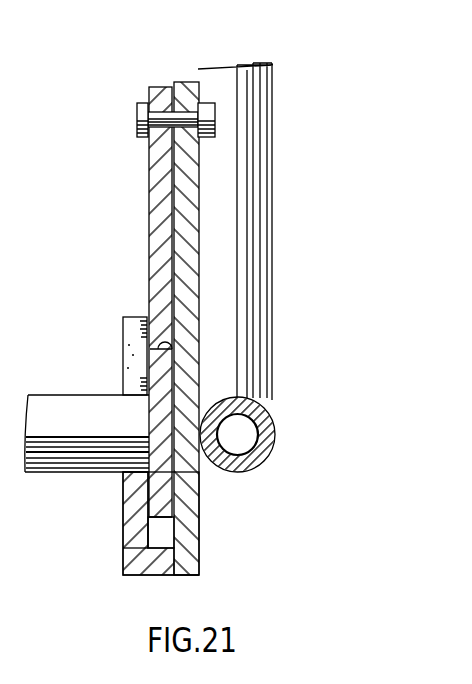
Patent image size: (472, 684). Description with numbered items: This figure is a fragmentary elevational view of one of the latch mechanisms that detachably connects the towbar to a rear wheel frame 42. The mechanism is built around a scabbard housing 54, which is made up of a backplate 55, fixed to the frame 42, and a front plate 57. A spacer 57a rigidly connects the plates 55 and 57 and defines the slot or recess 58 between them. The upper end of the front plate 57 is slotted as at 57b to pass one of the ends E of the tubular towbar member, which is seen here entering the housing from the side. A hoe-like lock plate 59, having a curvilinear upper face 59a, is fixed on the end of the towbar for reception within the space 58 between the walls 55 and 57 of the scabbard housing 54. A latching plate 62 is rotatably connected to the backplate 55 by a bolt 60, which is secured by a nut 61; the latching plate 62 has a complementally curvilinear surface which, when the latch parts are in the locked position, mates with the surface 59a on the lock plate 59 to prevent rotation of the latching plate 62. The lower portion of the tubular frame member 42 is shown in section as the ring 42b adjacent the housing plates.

The frame 42 is at (230, 78).
The ring portion of tubular member 42b is at (241, 469).
The scabbard housing 54 is at (118, 520).
The backplate 55 is at (193, 189).
The front plate 57 is at (160, 488).
The spacer 57a is at (157, 566).
The slot 57b is at (128, 329).
The slot or recess 58 is at (158, 535).
The lock plate 59 is at (147, 490).
The curvilinear upper face 59a is at (170, 343).
The bolt 60 is at (180, 118).
The nut 61 is at (207, 105).
The latching plate 62 is at (150, 170).
The end of tubular towbar member E is at (45, 455).